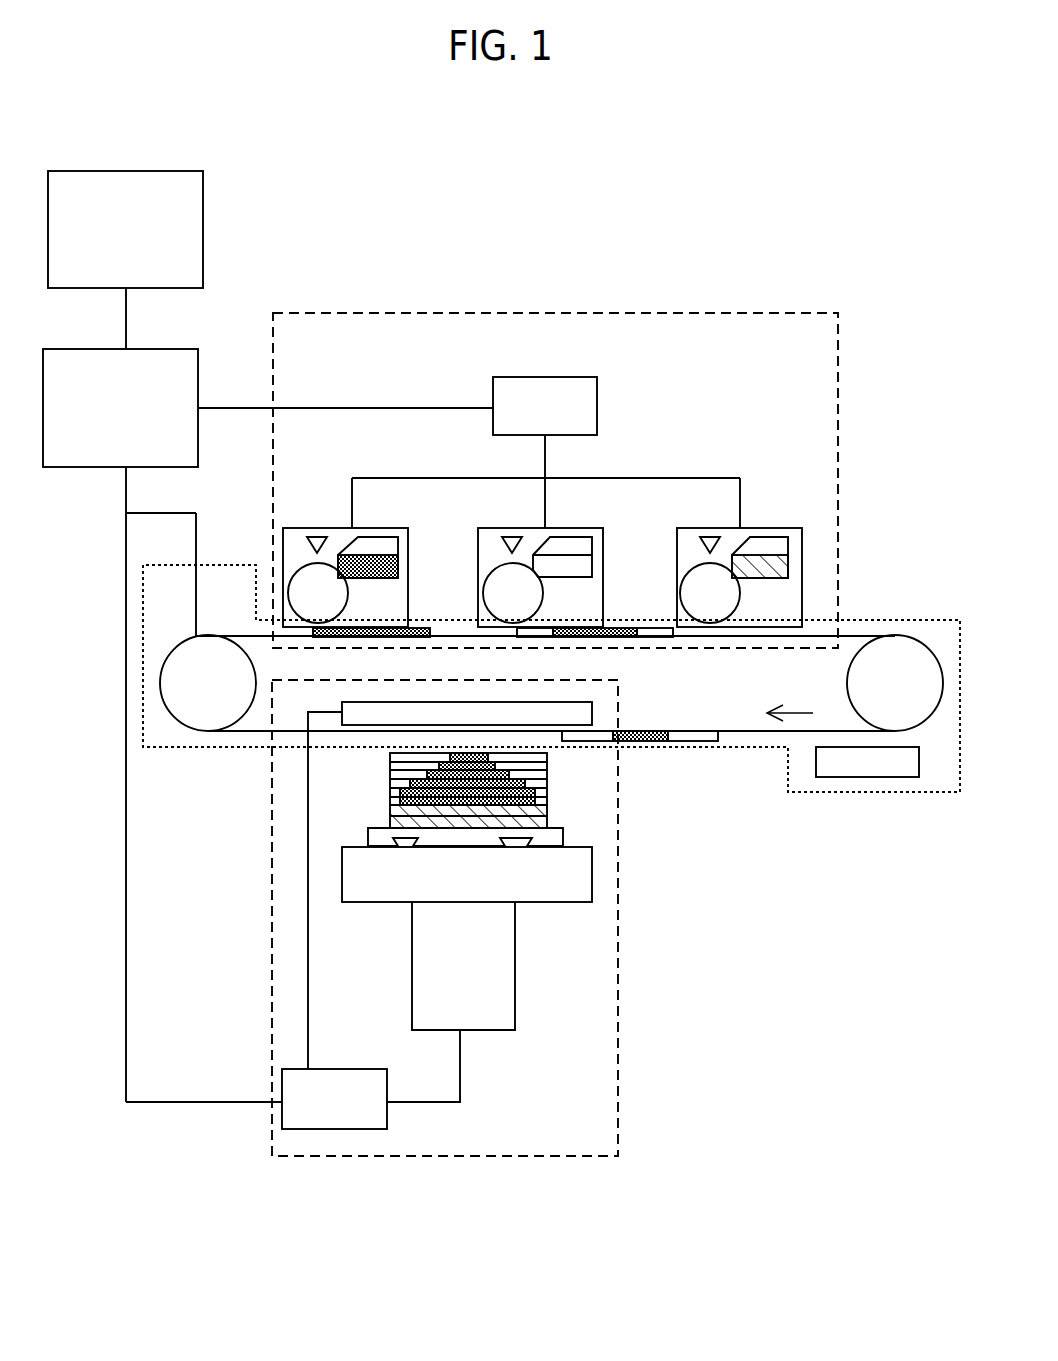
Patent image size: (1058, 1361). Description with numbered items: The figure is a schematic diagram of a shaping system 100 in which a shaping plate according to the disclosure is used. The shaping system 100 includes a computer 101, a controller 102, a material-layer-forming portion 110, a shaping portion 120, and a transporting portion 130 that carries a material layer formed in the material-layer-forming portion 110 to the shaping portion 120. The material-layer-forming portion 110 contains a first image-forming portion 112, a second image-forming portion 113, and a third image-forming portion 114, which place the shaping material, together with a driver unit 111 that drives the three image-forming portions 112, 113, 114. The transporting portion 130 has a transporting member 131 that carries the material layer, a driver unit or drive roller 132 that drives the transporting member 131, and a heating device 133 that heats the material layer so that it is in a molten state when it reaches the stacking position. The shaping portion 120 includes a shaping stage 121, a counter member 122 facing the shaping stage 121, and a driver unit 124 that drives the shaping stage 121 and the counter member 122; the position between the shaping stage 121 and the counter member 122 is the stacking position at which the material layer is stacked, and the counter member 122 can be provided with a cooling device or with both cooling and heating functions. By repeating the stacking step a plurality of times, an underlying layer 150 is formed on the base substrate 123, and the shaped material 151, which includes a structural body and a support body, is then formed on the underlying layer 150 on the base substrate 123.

The shaping system 100 is at (422, 211).
The computer 101 is at (165, 171).
The controller 102 is at (193, 332).
The material-layer-forming portion 110 is at (556, 313).
The driver unit 111 is at (551, 377).
The first image-forming portion 112 is at (325, 528).
The second image-forming portion 113 is at (561, 528).
The third image-forming portion 114 is at (761, 528).
The shaping portion 120 is at (618, 997).
The shaping stage 121 is at (592, 878).
The counter member 122 is at (570, 702).
The base substrate 123 is at (563, 840).
The driver unit 124 is at (282, 1108).
The transporting portion 130 is at (880, 620).
The transporting member 131 is at (248, 731).
The driver unit (drive roller) 132 is at (188, 657).
The heating device 133 is at (865, 770).
The underlying layer 150 is at (547, 805).
The shaped material 151 is at (390, 753).